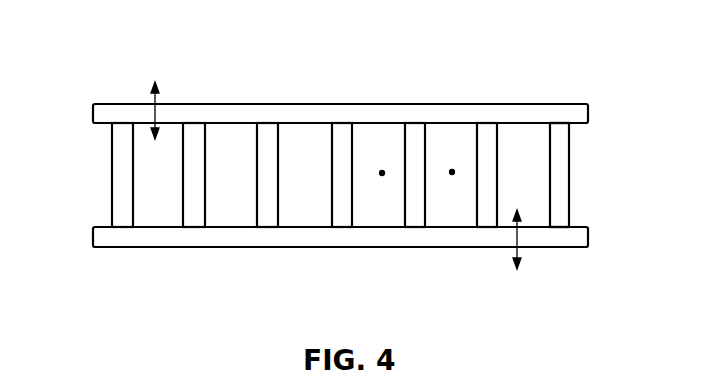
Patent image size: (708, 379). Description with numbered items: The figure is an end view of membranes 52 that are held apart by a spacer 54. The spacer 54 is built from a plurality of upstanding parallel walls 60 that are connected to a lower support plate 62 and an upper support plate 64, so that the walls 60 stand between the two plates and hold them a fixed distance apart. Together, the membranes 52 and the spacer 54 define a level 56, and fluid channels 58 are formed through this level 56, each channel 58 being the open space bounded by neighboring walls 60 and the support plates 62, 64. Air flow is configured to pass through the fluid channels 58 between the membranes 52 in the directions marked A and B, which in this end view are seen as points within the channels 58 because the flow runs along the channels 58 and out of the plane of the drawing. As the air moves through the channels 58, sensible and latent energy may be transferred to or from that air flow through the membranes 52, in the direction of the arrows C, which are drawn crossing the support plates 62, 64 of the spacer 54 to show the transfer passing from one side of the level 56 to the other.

The membranes 52 is at (573, 104).
The spacer 54 is at (356, 165).
The level 56 is at (350, 173).
The fluid channels 58 is at (230, 160).
The upstanding parallel walls 60 is at (112, 148).
The lower support plate 62 is at (572, 222).
The upper support plate 64 is at (572, 128).
The air flow direction A is at (382, 170).
The air flow direction B is at (452, 169).
The energy transfer direction arrows C is at (156, 100).